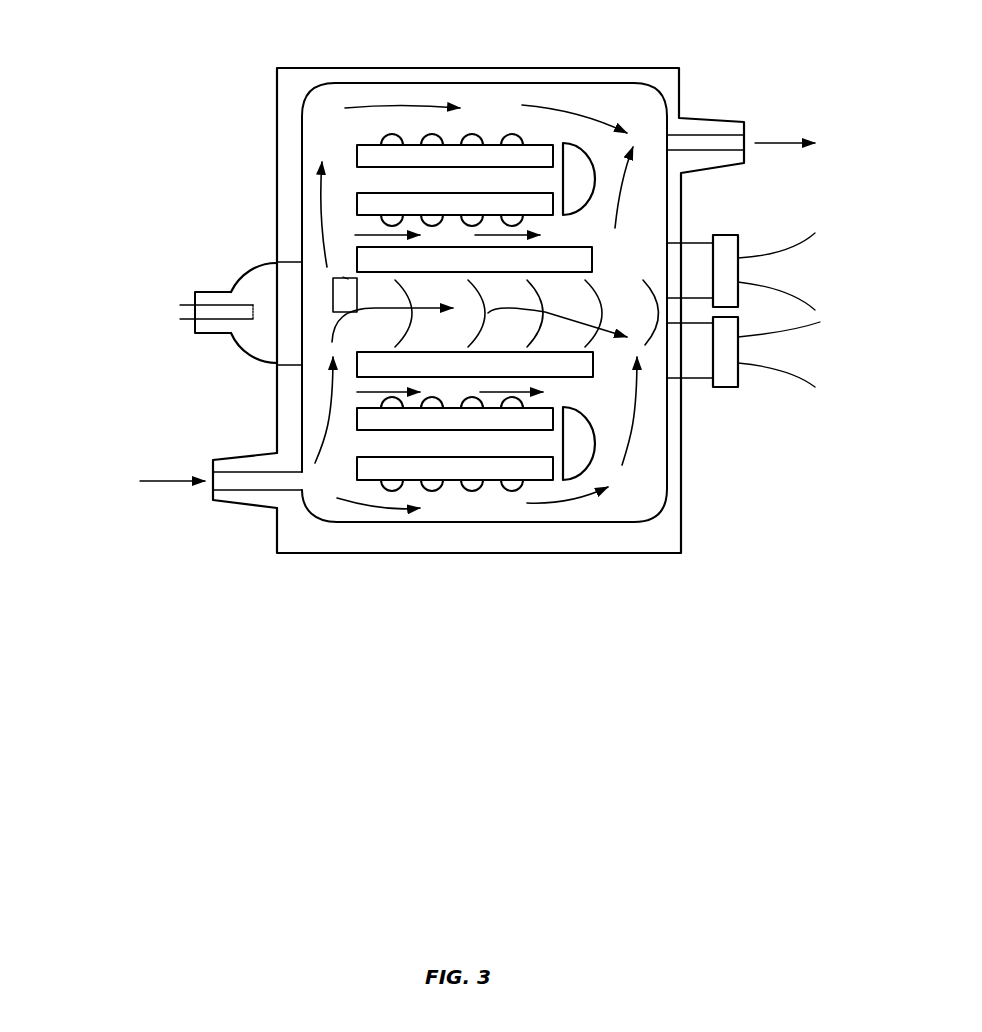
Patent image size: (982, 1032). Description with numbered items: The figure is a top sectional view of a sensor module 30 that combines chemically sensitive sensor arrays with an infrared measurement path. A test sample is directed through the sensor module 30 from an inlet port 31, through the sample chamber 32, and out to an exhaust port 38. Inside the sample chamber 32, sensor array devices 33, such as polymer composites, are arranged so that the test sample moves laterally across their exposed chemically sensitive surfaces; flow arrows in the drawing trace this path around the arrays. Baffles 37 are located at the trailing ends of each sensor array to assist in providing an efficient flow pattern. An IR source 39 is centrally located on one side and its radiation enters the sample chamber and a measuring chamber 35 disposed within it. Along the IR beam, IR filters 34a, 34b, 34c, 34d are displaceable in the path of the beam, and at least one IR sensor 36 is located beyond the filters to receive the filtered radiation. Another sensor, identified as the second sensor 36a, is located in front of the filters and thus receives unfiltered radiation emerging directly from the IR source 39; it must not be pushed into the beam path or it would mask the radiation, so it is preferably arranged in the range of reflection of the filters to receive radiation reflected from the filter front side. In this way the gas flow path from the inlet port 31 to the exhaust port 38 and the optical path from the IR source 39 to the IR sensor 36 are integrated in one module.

The sensor module 30 is at (647, 68).
The inlet port 31 is at (213, 492).
The sample chamber 32 is at (663, 533).
The sensor array devices 33 is at (403, 172).
The IR filter 34a is at (440, 316).
The IR filter 34b is at (515, 316).
The IR filter 34c is at (575, 316).
The IR filter 34d is at (637, 312).
The measuring chamber 35 is at (360, 295).
The IR sensor 36 is at (740, 297).
The second sensor 36a is at (343, 277).
The baffles 37 is at (589, 163).
The exhaust port 38 is at (745, 122).
The IR source 39 is at (195, 298).